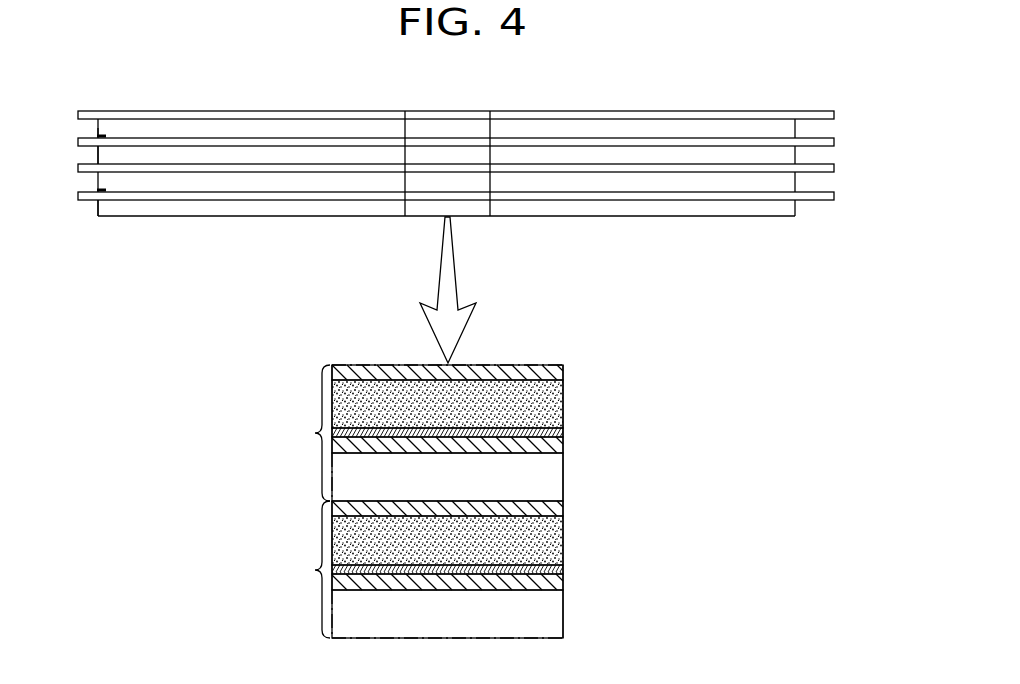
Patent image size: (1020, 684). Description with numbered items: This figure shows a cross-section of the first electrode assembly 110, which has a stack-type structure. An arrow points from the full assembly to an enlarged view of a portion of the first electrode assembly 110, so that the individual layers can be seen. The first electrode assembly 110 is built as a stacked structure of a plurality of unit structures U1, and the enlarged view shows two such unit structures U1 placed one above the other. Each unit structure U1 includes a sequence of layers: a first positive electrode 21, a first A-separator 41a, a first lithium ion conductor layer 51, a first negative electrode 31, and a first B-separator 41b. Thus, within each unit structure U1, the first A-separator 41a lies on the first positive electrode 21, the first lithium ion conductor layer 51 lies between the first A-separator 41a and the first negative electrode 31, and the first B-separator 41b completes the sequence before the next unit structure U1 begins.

The first electrode assembly 110 is at (815, 87).
The first B-separator 41b is at (836, 115).
The first A-separator 41a is at (836, 143).
The first negative electrode 31 is at (98, 137).
The first lithium ion conductor layer 51 is at (100, 139).
The first positive electrode 21 is at (100, 157).
The unit structure U1 is at (307, 501).